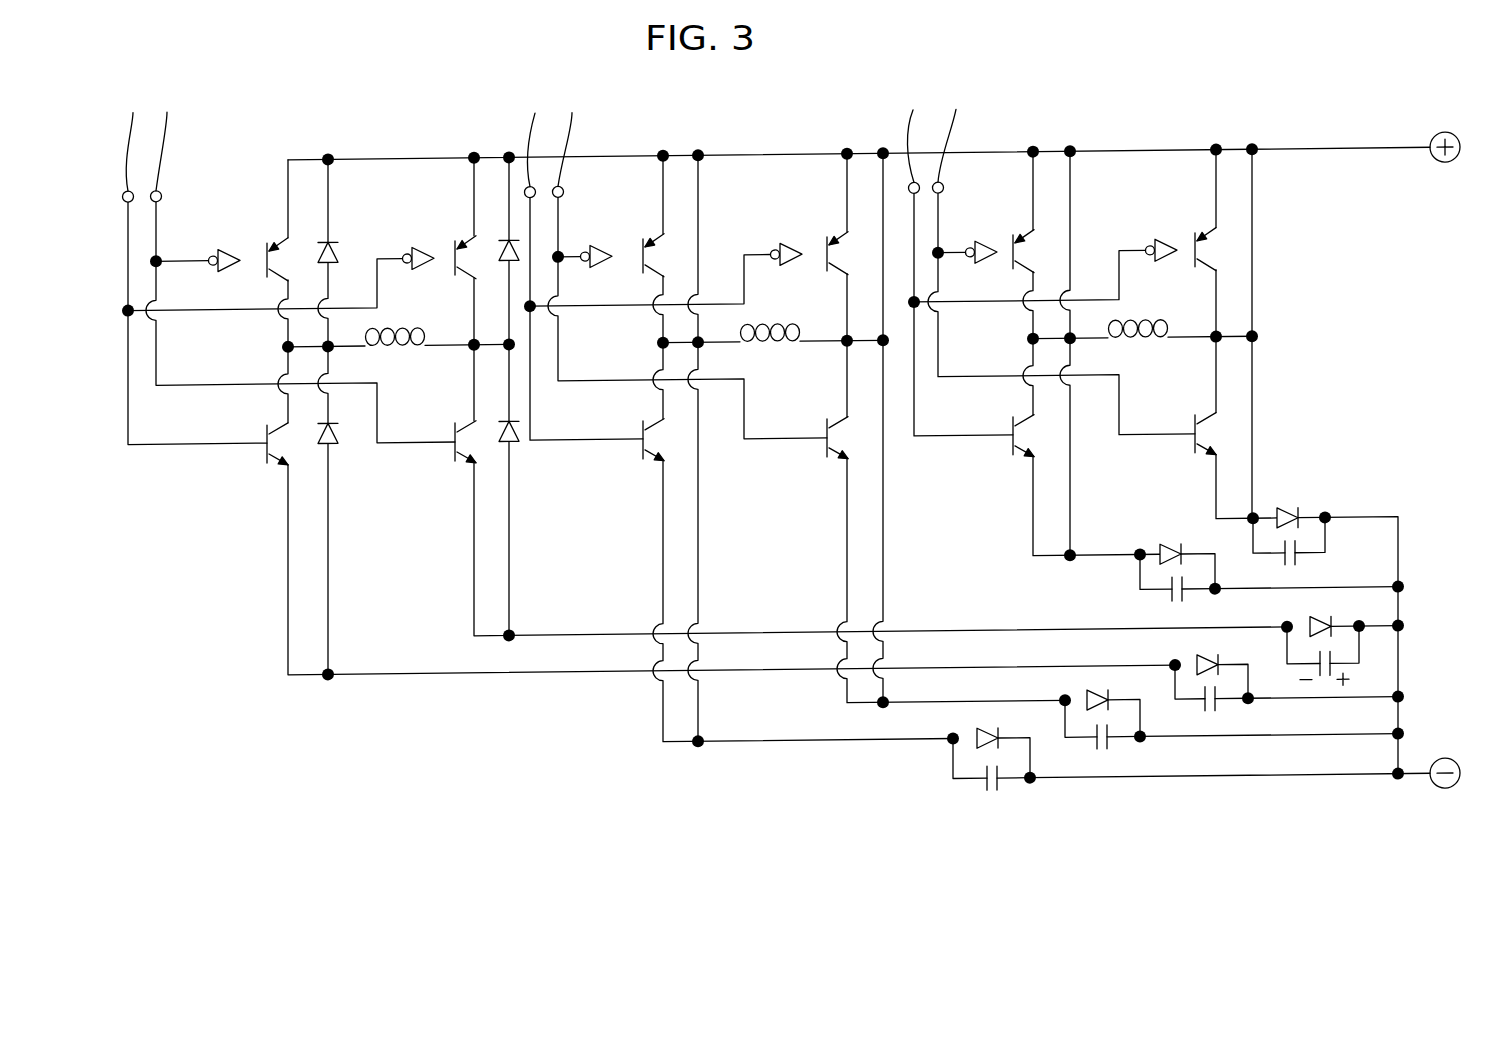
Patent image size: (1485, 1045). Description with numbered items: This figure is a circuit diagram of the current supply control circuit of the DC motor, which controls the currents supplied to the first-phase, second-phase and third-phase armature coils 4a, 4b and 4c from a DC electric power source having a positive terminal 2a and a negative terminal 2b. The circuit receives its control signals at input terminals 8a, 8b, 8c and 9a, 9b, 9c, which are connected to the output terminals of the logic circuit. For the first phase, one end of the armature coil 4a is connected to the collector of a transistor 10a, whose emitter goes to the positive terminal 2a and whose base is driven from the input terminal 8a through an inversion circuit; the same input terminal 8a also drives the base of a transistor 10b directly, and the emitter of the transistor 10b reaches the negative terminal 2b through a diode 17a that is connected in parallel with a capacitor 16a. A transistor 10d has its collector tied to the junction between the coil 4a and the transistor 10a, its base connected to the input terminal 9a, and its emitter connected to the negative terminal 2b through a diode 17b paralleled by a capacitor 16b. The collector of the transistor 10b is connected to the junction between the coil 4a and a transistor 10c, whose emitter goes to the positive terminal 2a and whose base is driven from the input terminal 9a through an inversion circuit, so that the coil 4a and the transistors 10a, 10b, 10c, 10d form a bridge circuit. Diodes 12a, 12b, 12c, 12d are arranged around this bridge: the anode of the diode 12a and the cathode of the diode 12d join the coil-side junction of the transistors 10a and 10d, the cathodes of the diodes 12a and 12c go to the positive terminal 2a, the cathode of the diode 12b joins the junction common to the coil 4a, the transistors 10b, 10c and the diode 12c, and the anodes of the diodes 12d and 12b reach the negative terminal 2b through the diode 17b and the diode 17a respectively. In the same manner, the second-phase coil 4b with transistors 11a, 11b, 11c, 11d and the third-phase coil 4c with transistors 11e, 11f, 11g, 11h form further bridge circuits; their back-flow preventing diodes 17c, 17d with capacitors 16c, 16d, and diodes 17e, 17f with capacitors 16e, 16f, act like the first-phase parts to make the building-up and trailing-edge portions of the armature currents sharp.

The positive terminal 2a is at (1436, 150).
The negative terminal 2b is at (1443, 806).
The first-phase armature coil 4a is at (410, 357).
The second-phase armature coil 4b is at (788, 357).
The third-phase armature coil 4c is at (1158, 357).
The input terminal 8a is at (165, 143).
The input terminal 8b is at (569, 141).
The input terminal 8c is at (949, 138).
The input terminal 9a is at (131, 143).
The input terminal 9b is at (532, 141).
The input terminal 9c is at (910, 139).
The transistor 10a is at (271, 244).
The transistor 10b is at (474, 464).
The transistor 10c is at (463, 245).
The transistor 10d is at (273, 468).
The transistor 11a is at (650, 245).
The transistor 11b is at (837, 467).
The transistor 11c is at (836, 247).
The transistor 11d is at (653, 466).
The transistor 11e is at (1028, 246).
The transistor 11f is at (1212, 470).
The transistor 11g is at (1210, 248).
The transistor 11h is at (1028, 468).
The diode 12a is at (340, 254).
The diode 12b is at (517, 442).
The diode 12c is at (503, 266).
The diode 12d is at (340, 440).
The capacitor 16a is at (1331, 694).
The capacitor 16b is at (1214, 726).
The capacitor 16c is at (1101, 762).
The capacitor 16d is at (991, 802).
The capacitor 16e is at (1292, 579).
The capacitor 16f is at (1181, 615).
The diode 17a is at (1321, 637).
The diode 17b is at (1207, 669).
The back-flow preventing diode 17c is at (1096, 703).
The back-flow preventing diode 17d is at (989, 740).
The diode 17e is at (1288, 521).
The diode 17f is at (1172, 556).